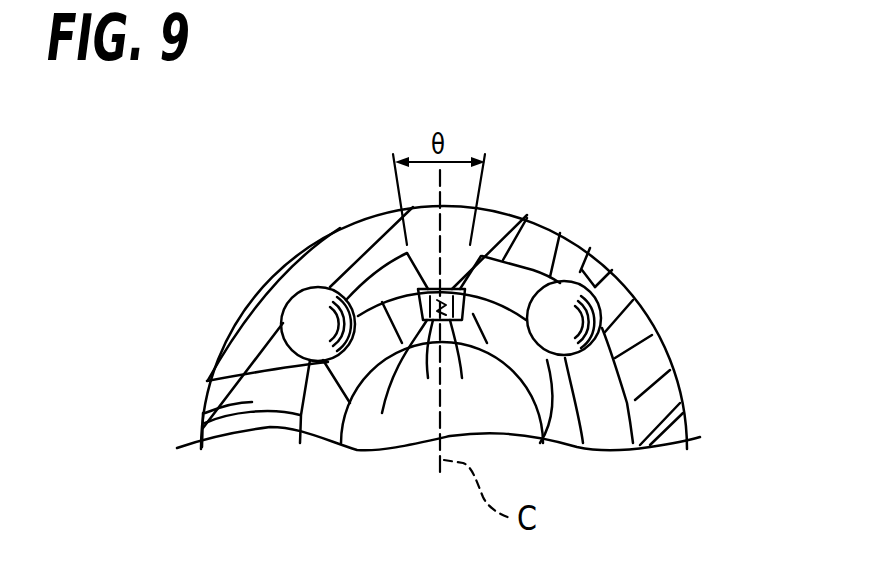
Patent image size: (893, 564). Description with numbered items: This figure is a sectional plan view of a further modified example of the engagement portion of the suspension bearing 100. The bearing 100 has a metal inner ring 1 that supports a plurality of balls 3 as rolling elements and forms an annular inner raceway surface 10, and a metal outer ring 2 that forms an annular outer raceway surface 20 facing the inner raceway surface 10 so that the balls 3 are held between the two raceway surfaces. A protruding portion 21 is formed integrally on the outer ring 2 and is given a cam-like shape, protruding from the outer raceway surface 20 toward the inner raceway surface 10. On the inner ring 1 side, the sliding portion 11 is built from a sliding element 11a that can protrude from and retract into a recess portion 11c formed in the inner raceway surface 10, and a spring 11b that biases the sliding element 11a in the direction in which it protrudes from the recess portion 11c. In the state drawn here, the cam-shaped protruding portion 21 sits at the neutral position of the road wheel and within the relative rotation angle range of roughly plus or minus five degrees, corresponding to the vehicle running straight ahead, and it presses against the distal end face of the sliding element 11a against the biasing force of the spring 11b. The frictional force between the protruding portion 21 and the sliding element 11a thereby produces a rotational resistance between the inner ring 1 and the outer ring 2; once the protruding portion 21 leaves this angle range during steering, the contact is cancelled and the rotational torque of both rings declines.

The inner ring 1 is at (207, 422).
The outer ring 2 is at (660, 403).
The balls 3 is at (285, 305).
The inner raceway surface 10 is at (232, 380).
The sliding portion 11 is at (400, 276).
The sliding element 11a is at (389, 385).
The spring 11b is at (476, 367).
The recess portion 11c is at (416, 366).
The outer raceway surface 20 is at (617, 367).
The protruding portion 21 is at (482, 256).
The bearing 100 is at (655, 206).